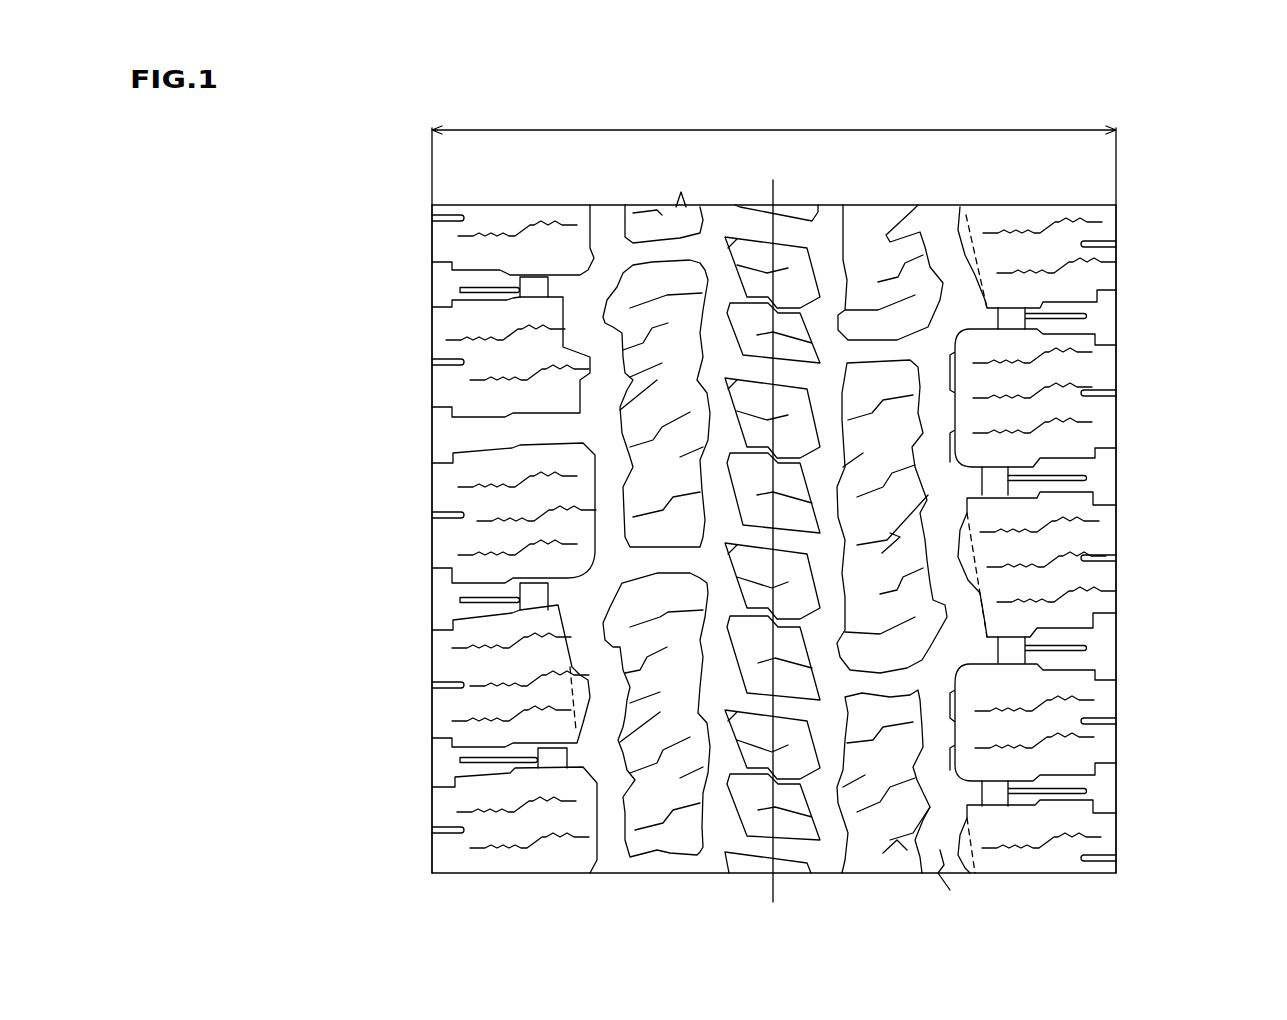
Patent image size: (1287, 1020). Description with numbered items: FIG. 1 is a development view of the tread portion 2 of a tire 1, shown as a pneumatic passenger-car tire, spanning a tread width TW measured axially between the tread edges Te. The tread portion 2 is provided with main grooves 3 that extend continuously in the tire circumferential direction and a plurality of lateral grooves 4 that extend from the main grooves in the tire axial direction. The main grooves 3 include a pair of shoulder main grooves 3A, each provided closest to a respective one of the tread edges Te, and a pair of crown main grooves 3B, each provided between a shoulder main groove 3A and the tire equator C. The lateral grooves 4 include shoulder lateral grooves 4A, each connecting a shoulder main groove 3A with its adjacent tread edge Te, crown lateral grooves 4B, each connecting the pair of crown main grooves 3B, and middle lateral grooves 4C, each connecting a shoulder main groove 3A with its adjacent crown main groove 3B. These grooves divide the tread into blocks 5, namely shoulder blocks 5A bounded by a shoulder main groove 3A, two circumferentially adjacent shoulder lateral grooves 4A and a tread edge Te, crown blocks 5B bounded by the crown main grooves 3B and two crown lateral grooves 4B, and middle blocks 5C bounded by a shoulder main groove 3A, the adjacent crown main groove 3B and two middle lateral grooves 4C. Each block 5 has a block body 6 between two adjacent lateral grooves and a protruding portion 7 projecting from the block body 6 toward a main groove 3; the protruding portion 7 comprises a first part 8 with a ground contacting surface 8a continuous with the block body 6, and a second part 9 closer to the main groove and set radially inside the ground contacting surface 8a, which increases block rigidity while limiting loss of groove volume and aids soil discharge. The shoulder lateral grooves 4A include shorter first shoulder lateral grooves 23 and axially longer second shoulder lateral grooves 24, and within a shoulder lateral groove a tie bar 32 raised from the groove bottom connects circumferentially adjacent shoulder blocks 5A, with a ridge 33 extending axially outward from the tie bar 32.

The tire 1 is at (1206, 160).
The tread portion 2 is at (1125, 180).
The main grooves 3 is at (830, 230).
The shoulder main grooves 3A is at (606, 230).
The crown main grooves 3B is at (717, 228).
The lateral grooves 4 is at (658, 246).
The shoulder lateral grooves 4A is at (1107, 320).
The crown lateral grooves 4B is at (756, 709).
The middle lateral grooves 4C is at (879, 690).
The blocks 5 is at (475, 712).
The shoulder blocks 5A is at (1078, 414).
The crown blocks 5B is at (792, 828).
The middle blocks 5C is at (888, 383).
The block body 6 is at (503, 357).
The protruding portion 7 is at (362, 378).
The first part 8 is at (588, 350).
The ground contacting surface 8a is at (963, 530).
The second part 9 is at (587, 367).
The first shoulder lateral grooves 23 is at (437, 600).
The second shoulder lateral grooves 24 is at (442, 782).
The tie bar 32 is at (550, 763).
The ridge 33 is at (483, 762).
The tread width TW is at (774, 116).
The tread edges Te is at (1116, 268).
The tire equator C is at (776, 527).